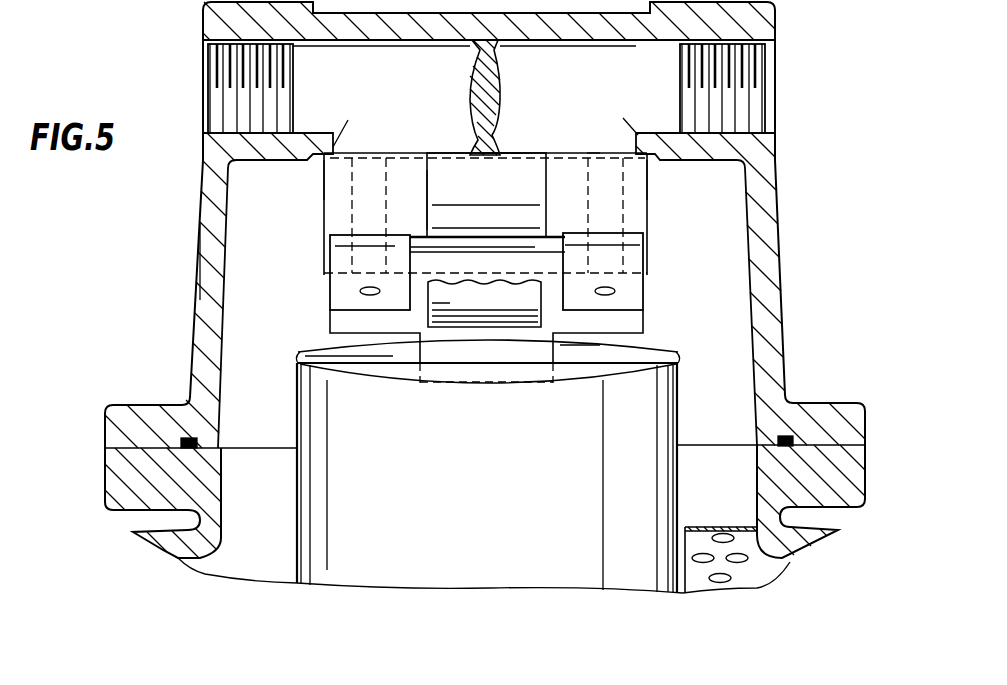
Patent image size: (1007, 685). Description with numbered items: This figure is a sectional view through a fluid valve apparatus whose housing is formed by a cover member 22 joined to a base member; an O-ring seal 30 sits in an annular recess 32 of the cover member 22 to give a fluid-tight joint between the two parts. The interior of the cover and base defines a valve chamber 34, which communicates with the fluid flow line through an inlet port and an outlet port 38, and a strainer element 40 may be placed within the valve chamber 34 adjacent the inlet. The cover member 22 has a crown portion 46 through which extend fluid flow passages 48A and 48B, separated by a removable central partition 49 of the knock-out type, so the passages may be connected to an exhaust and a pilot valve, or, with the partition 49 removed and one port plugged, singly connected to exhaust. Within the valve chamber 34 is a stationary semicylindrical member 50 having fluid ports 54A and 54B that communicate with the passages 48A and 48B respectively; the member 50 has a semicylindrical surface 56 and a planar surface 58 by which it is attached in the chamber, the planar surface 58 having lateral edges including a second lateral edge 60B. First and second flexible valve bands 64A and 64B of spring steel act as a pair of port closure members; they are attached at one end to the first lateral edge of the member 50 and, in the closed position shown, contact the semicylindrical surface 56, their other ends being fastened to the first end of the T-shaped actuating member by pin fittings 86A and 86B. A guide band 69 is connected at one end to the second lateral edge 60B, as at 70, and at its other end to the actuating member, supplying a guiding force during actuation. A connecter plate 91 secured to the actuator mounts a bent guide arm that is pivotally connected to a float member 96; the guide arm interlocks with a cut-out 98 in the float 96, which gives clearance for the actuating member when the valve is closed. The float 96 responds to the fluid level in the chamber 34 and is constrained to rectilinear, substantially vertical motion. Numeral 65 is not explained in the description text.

The cover member 22 is at (770, 225).
The O-ring seal 30 is at (782, 437).
The annular recess 32 is at (797, 438).
The valve chamber 34 is at (240, 213).
The outlet port 38 is at (197, 558).
The strainer element 40 is at (716, 527).
The crown portion 46 is at (580, 6).
The fluid flow passage 48A is at (776, 66).
The fluid flow passage 48B is at (203, 68).
The removable central partition 49 is at (494, 96).
The stationary semicylindrical member 50 is at (638, 207).
The fluid port 54A is at (620, 240).
The fluid port 54B is at (355, 223).
The semicylindrical surface 56 is at (535, 198).
The planar surface 58 is at (587, 150).
The second lateral edge 60B is at (375, 153).
The first flexible valve band 64A is at (637, 283).
The second flexible valve band 64B is at (337, 282).
The housing side wall 65 is at (350, 158).
The guide band 69 is at (437, 190).
The connection of guide band 70 is at (500, 153).
The fastening means 86A is at (607, 293).
The fastening means 86B is at (367, 297).
The connecter plate 91 is at (503, 322).
The float member 96 is at (680, 396).
The cut-out 98 is at (678, 352).